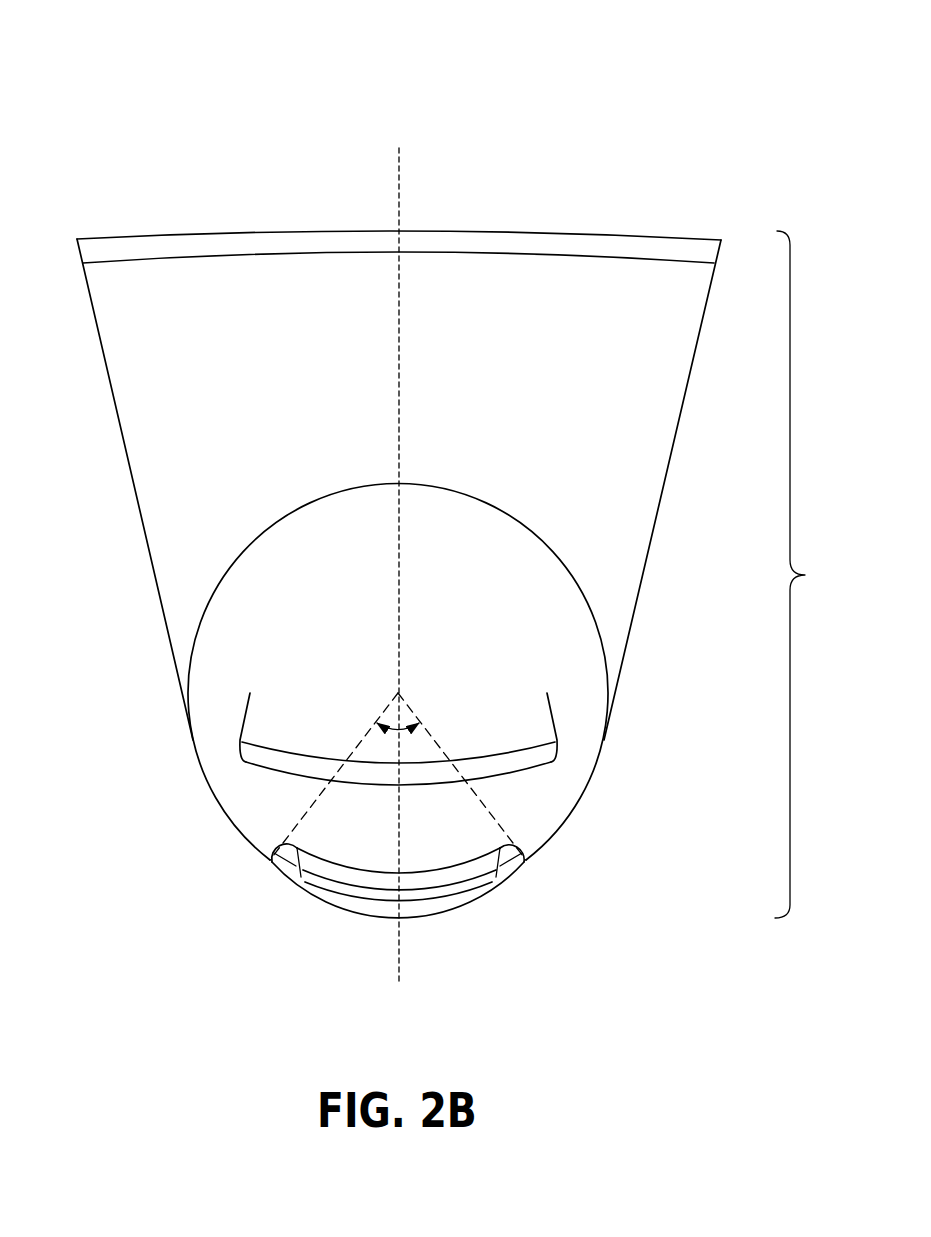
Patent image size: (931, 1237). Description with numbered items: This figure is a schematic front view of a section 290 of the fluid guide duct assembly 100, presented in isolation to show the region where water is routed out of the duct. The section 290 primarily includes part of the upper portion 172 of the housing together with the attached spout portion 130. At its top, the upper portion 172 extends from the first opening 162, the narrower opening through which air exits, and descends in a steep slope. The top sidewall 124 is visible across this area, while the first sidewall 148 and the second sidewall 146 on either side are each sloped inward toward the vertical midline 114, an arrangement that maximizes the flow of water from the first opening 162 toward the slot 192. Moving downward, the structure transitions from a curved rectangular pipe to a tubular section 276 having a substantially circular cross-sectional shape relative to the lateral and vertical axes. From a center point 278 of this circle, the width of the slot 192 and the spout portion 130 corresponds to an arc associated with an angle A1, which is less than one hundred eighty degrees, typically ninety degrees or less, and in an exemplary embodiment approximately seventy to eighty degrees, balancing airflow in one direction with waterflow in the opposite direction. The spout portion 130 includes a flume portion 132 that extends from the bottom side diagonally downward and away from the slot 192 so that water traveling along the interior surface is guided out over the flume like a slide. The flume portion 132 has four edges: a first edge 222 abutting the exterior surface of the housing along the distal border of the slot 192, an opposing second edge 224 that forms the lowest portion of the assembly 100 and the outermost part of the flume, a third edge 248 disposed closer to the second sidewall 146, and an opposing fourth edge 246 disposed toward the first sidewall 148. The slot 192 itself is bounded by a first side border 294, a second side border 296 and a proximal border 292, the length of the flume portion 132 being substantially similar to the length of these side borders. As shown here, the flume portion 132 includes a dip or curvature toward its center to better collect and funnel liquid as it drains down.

The assembly 100 is at (146, 100).
The section 290 is at (634, 150).
The first opening 162 is at (276, 212).
The vertical midline 114 is at (400, 193).
The top sidewall 124 is at (540, 333).
The tubular section 276 is at (503, 498).
The first sidewall 148 is at (122, 546).
The second sidewall 146 is at (673, 543).
The upper portion 172 is at (813, 574).
The center point 278 is at (388, 690).
The angle A1 is at (403, 735).
The slot 192 is at (373, 873).
The first edge 222 is at (418, 870).
The first side border 294 is at (272, 860).
The second side border 296 is at (526, 860).
The third edge 248 is at (293, 887).
The second edge 224 is at (373, 918).
The proximal border 292 is at (443, 913).
The fourth edge 246 is at (500, 886).
The flume portion 132 is at (522, 903).
The spout portion 130 is at (333, 928).